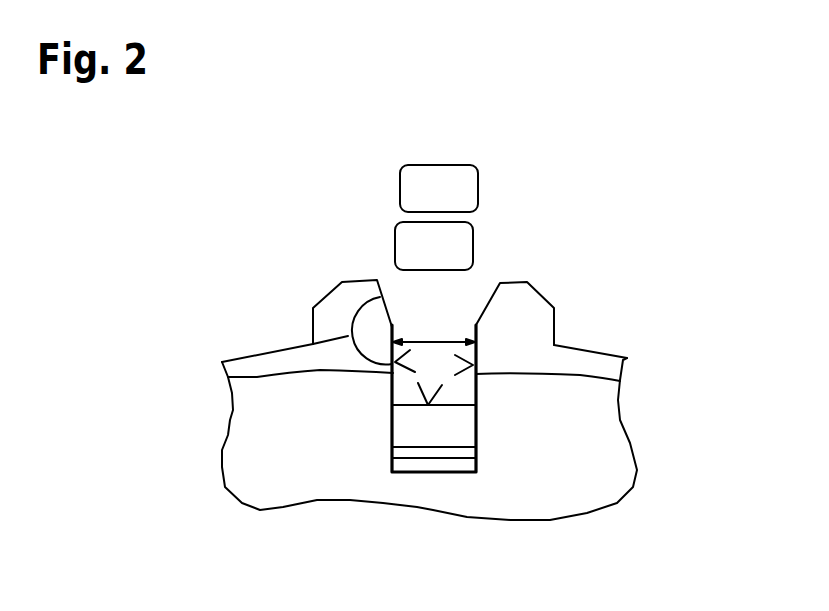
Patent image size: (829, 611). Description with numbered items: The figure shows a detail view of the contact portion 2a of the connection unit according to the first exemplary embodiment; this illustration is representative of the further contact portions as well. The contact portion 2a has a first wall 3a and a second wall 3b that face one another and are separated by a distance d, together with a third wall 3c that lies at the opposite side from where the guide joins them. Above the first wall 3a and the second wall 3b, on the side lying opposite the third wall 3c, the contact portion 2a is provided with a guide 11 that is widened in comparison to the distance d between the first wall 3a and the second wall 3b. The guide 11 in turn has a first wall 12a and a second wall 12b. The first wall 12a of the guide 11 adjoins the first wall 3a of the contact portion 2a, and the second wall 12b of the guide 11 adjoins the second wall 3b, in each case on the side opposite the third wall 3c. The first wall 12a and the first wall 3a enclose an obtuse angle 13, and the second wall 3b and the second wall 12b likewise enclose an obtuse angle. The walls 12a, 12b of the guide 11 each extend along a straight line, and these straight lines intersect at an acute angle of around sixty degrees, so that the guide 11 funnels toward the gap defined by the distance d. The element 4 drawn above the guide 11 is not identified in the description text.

The contact portion 2a is at (528, 192).
The stacked strip element 4 is at (465, 283).
The guide 11 is at (384, 276).
The first wall of the guide 12a is at (377, 300).
The second wall of the guide 12b is at (488, 301).
The obtuse angle 13 is at (313, 344).
The first wall 3a is at (233, 378).
The second wall 3b is at (620, 381).
The third wall 3c is at (442, 385).
The distance d is at (434, 331).